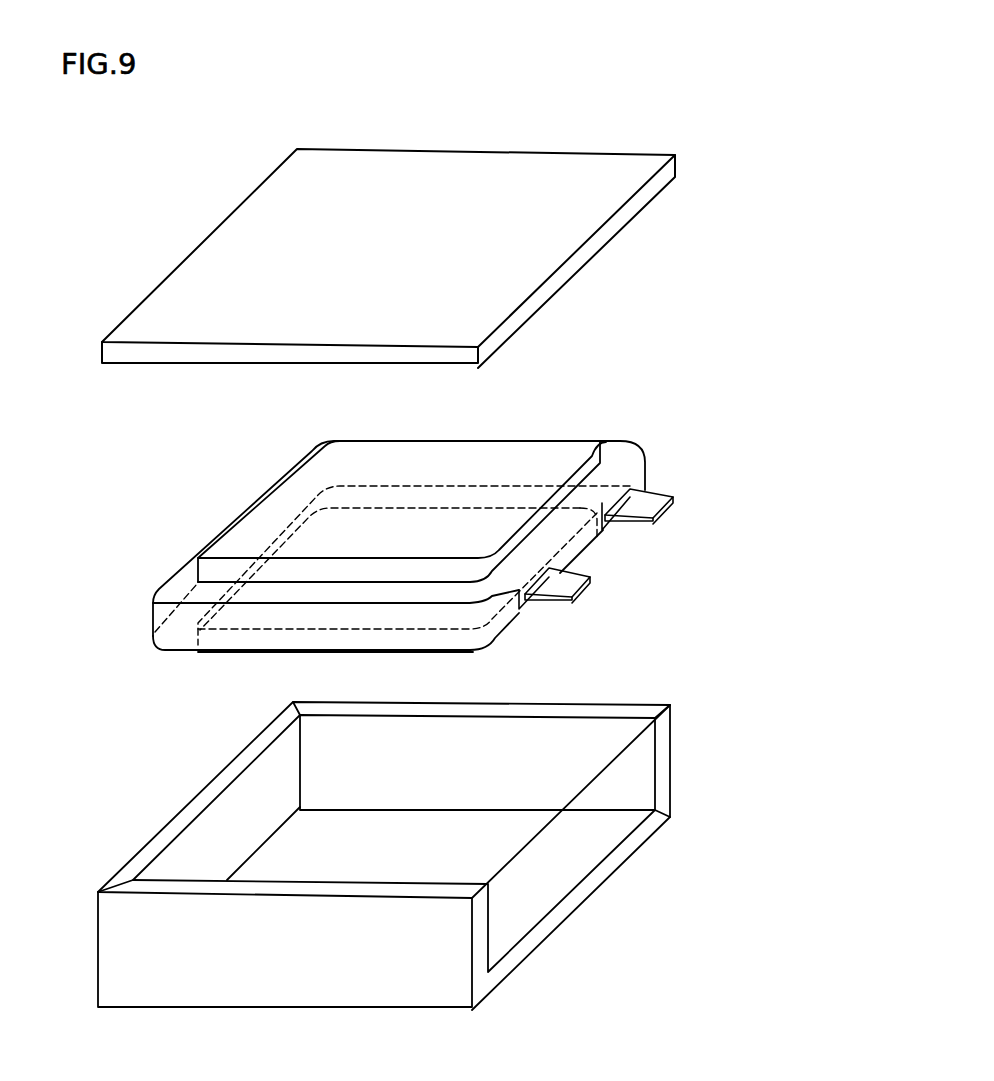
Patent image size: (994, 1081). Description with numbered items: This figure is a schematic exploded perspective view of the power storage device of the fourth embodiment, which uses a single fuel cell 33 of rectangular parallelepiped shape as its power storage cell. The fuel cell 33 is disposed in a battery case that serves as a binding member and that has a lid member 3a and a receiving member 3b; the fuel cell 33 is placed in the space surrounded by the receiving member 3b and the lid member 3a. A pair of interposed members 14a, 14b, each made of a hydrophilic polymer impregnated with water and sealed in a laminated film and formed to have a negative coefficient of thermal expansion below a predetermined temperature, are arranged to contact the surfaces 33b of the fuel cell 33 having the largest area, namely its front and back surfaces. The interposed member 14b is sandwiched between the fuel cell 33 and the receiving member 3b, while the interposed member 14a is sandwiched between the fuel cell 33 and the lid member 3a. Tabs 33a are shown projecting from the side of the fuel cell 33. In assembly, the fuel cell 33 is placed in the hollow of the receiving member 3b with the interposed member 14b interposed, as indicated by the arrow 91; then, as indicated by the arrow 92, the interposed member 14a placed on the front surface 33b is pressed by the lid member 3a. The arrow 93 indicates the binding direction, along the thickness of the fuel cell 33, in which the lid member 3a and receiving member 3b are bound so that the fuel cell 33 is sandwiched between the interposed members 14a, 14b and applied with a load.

The lid member 3a is at (473, 168).
The receiving member 3b is at (663, 771).
The interposed member 14a is at (268, 496).
The interposed member 14b is at (227, 655).
The fuel cell 33 is at (175, 588).
The electrode tab (terminal) 33a is at (650, 503).
The surface of fuel cell having the largest area 33b is at (620, 457).
The arrow 91 is at (385, 747).
The arrow 92 is at (388, 375).
The arrow 93 is at (60, 492).